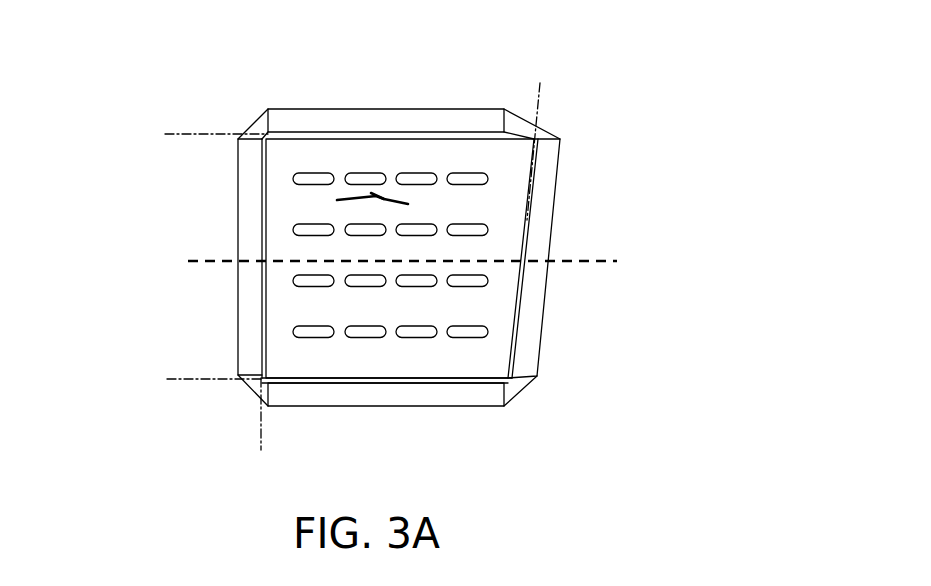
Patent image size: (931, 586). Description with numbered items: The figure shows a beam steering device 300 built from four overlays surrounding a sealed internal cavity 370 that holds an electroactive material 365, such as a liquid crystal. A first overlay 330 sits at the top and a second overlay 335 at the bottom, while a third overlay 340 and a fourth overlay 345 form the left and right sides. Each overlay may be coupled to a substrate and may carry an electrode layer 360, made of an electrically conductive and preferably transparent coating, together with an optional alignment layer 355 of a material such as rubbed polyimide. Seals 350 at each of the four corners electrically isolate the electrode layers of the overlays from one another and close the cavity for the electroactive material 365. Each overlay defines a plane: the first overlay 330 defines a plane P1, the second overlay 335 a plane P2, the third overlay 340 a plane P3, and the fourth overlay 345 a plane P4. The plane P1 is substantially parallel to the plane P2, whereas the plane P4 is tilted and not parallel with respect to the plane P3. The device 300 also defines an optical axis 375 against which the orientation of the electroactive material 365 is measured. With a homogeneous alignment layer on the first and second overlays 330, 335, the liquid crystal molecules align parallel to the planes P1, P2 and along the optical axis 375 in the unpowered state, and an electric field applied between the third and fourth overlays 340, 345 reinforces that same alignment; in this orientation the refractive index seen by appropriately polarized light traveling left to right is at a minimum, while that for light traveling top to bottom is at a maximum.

The beam steering device 300 is at (402, 267).
The first overlay 330 is at (383, 122).
The second overlay 335 is at (402, 395).
The third overlay 340 is at (252, 252).
The fourth overlay 345 is at (540, 253).
The seals 350 is at (255, 393).
The alignment layer 355 is at (317, 374).
The electrode layer 360 is at (330, 132).
The electroactive material 365 is at (467, 283).
The sealed internal cavity 370 is at (371, 193).
The optical axis 375 is at (202, 258).
The plane of first overlay P1 is at (215, 132).
The plane of second overlay P2 is at (460, 380).
The plane of third overlay P3 is at (257, 425).
The plane of fourth overlay P4 is at (540, 102).